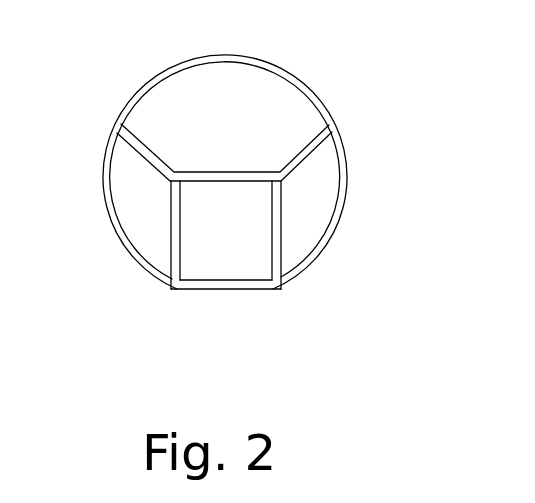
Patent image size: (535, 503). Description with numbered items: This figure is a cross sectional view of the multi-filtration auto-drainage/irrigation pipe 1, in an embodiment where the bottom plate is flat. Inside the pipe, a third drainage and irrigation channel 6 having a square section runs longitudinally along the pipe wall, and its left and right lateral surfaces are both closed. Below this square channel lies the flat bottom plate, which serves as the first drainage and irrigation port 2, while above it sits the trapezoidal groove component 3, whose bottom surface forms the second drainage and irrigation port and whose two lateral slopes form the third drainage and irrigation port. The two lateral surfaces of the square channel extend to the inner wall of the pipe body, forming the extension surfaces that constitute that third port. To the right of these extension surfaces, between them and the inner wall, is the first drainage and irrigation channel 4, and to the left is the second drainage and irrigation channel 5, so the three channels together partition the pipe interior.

The multi-filtration auto-drainage/irrigation pipe 1 is at (277, 72).
The first drainage and irrigation port 2 is at (215, 285).
The trapezoidal groove component 3 is at (310, 147).
The first drainage and irrigation channel 4 is at (145, 203).
The second drainage and irrigation channel 5 is at (225, 127).
The third drainage and irrigation channel 6 is at (229, 242).